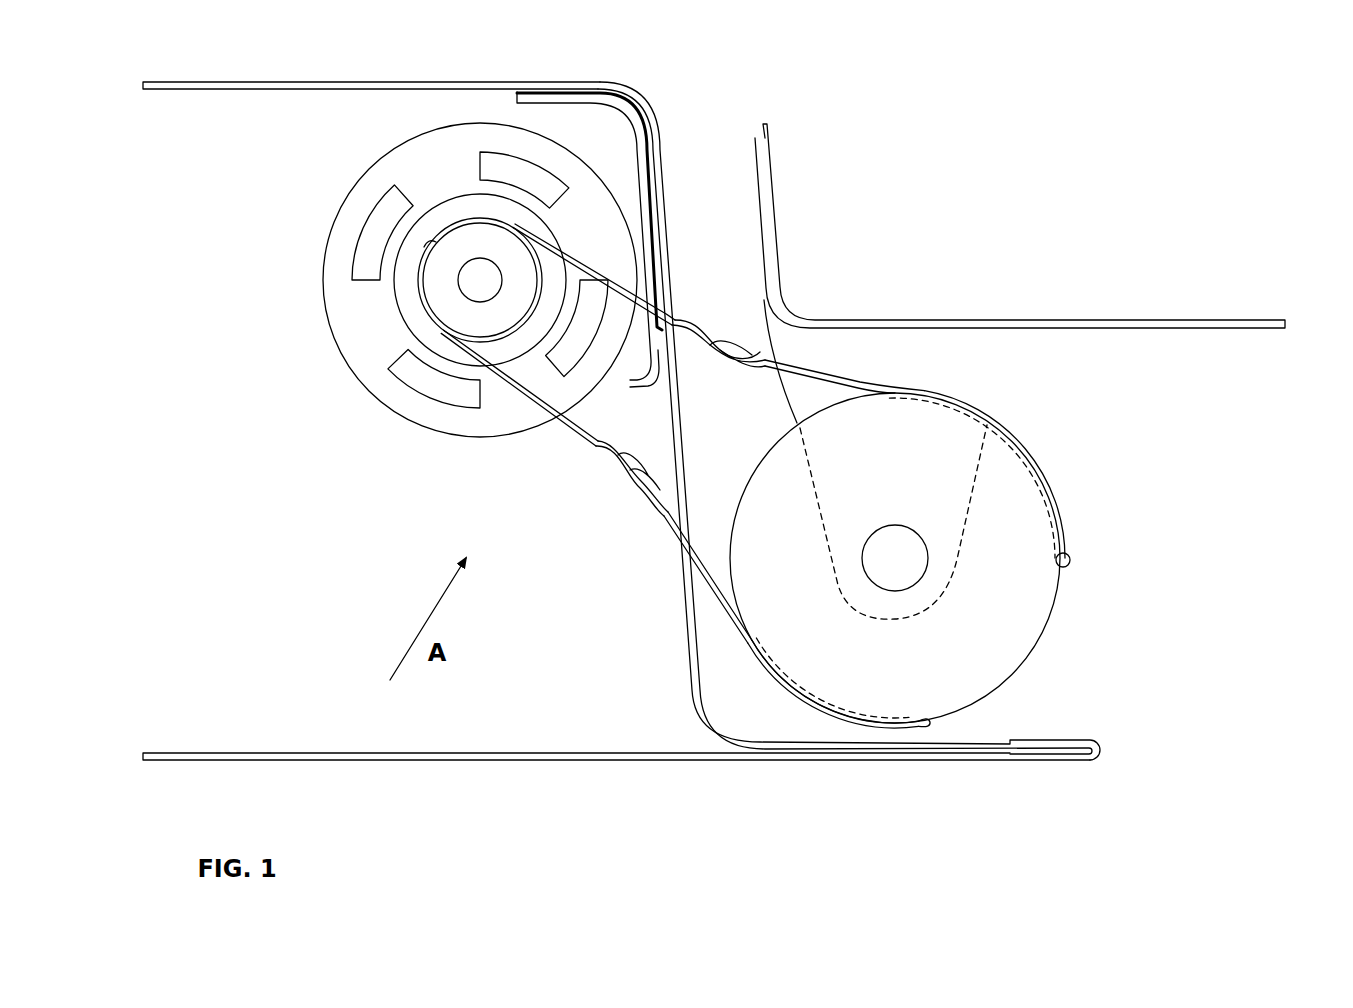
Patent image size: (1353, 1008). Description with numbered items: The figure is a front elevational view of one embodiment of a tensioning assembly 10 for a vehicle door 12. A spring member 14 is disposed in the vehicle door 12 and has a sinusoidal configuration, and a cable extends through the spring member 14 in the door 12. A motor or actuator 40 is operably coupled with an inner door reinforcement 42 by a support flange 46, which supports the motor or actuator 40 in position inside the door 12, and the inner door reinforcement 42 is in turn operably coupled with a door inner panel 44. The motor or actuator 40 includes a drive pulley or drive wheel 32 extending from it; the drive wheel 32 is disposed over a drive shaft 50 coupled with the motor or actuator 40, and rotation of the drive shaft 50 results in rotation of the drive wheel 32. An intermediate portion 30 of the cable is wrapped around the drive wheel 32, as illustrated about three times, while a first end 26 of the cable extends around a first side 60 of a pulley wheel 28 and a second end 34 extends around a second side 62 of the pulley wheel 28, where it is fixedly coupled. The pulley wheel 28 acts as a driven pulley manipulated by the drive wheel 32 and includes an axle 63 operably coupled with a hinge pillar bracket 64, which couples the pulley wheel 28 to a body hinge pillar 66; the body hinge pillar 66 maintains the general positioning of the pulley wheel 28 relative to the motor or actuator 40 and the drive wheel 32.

The tensioning assembly 10 is at (916, 276).
The vehicle door 12 is at (280, 549).
The spring member 14 is at (706, 312).
The first end 26 is at (1070, 560).
The pulley wheel 28 is at (1040, 647).
The intermediate portion 30 is at (575, 425).
The drive wheel 32 is at (443, 293).
The second end 34 is at (928, 730).
The motor or actuator 40 is at (363, 360).
The inner door reinforcement 42 is at (615, 112).
The door inner panel 44 is at (228, 86).
The support flange 46 is at (622, 180).
The drive shaft 50 is at (453, 248).
The first side 60 is at (1002, 478).
The second side 62 is at (813, 662).
The axle 63 is at (910, 553).
The hinge pillar bracket 64 is at (992, 378).
The body hinge pillar 66 is at (993, 318).